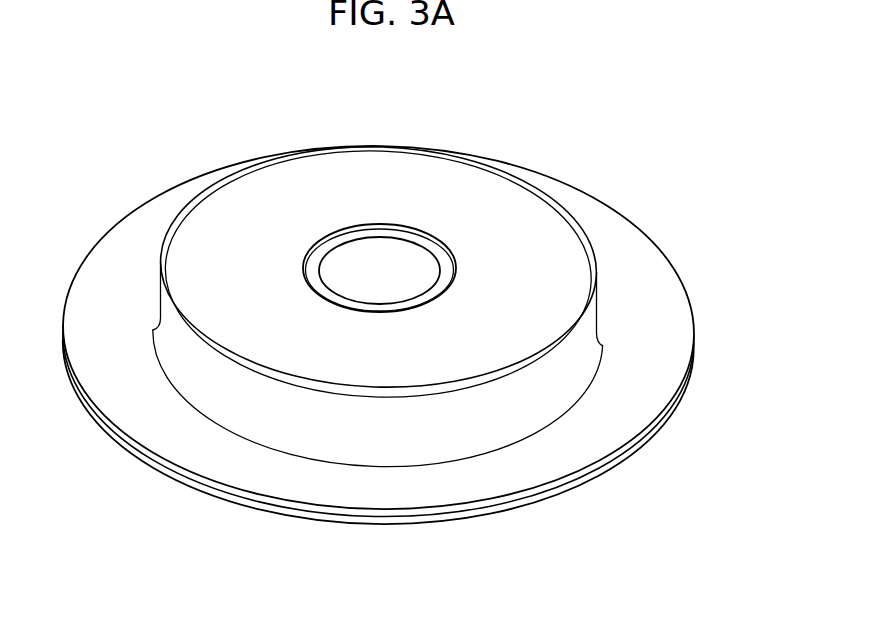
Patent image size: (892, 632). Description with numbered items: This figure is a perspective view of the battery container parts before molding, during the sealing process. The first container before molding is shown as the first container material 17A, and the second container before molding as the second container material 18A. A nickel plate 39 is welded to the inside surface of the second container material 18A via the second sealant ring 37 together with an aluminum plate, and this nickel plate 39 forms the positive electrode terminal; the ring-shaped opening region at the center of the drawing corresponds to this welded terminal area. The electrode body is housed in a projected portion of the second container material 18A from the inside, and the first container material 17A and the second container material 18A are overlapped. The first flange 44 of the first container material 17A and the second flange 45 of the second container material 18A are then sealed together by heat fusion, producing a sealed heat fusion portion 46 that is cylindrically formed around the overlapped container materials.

The first container material 17A is at (587, 483).
The second container material 18A is at (432, 323).
The second sealant ring 37 is at (395, 207).
The nickel plate 39 is at (375, 258).
The first flange 44 is at (668, 415).
The second flange 45 is at (762, 430).
The sealed heat fusion portion 46 is at (432, 326).